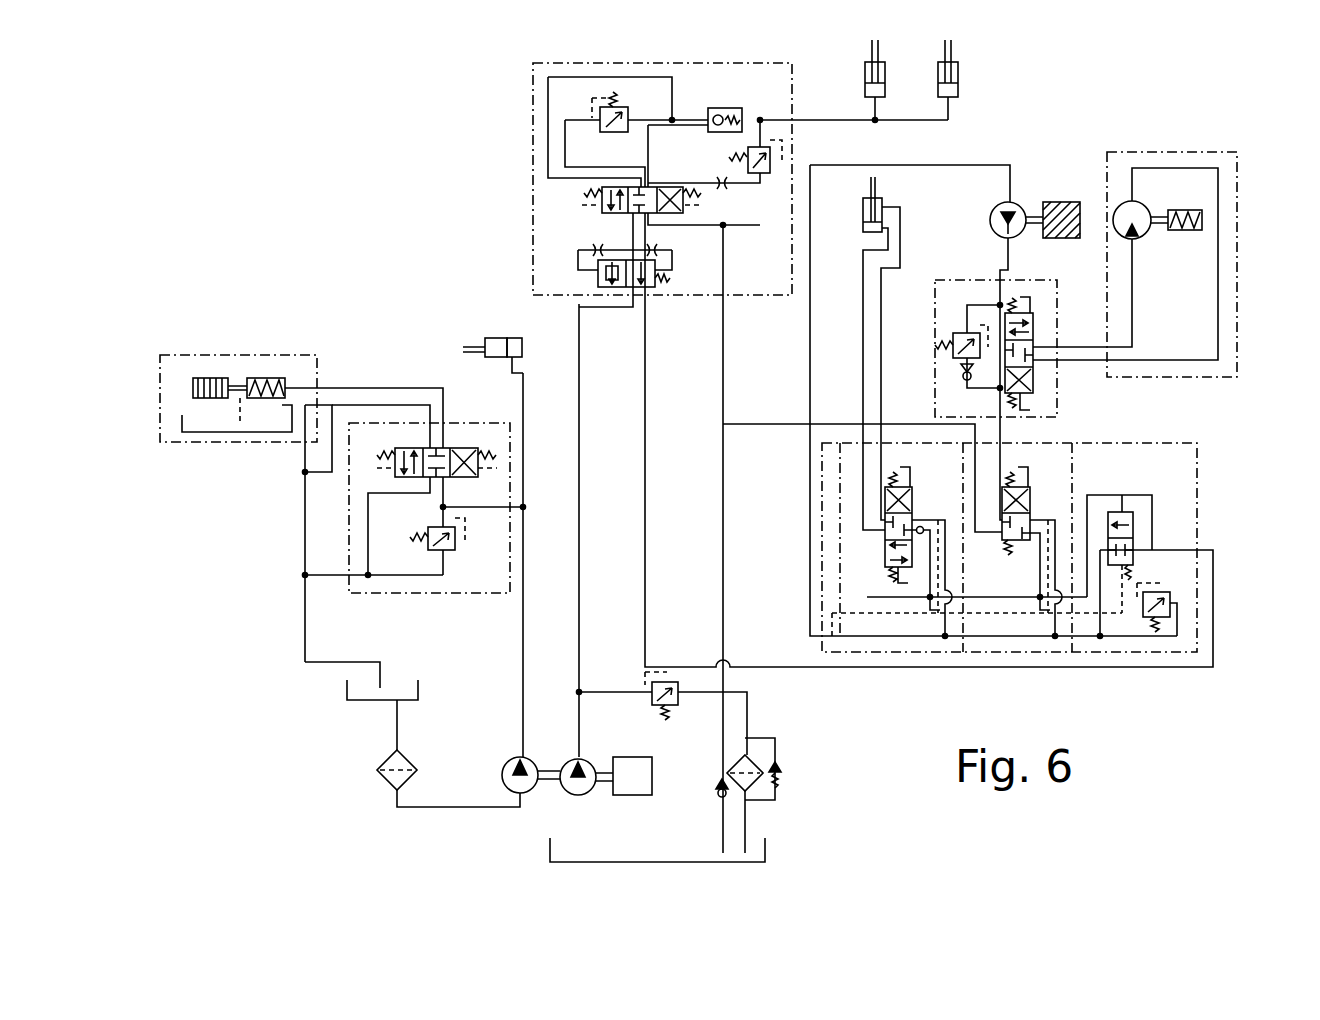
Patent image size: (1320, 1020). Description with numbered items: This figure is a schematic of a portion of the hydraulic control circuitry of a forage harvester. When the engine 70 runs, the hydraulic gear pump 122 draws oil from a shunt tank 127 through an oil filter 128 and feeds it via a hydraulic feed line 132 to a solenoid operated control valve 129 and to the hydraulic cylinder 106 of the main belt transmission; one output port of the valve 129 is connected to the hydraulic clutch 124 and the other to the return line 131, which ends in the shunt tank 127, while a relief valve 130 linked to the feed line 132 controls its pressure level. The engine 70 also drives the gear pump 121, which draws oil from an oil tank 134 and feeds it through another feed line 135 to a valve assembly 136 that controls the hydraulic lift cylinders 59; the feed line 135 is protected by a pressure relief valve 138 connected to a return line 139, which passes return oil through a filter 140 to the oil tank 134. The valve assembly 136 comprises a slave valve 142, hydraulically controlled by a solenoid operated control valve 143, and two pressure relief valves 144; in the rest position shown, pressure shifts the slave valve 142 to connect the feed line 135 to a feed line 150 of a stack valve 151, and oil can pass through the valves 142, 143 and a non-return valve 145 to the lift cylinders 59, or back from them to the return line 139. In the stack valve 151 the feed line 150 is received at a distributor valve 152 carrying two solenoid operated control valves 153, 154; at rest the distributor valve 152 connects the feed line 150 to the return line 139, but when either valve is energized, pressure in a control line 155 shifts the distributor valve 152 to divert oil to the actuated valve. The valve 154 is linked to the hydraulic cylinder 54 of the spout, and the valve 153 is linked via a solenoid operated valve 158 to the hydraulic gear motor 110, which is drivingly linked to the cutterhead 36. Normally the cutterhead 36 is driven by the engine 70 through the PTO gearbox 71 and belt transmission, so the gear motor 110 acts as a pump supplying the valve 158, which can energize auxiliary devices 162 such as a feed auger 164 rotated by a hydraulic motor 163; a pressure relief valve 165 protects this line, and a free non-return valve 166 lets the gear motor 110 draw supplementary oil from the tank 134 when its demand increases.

The cutterhead 36 is at (1062, 202).
The hydraulic cylinder 54 is at (863, 228).
The hydraulic lift cylinders 59 is at (886, 90).
The engine 70 is at (622, 797).
The PTO gearbox 71 is at (210, 355).
The hydraulic cylinder 106 is at (513, 338).
The hydraulic gear motor 110 is at (991, 228).
The gear pump 121 is at (566, 760).
The hydraulic gear pump 122 is at (508, 760).
The hydraulic clutch 124 is at (265, 378).
The shunt tank 127 is at (347, 690).
The oil filter 128 is at (378, 765).
The solenoid operated control valve 129 is at (460, 450).
The relief valve 130 is at (450, 552).
The return line 131 is at (305, 562).
The hydraulic feed line 132 is at (521, 660).
The oil tank 134 is at (550, 848).
The feed line 135 is at (581, 527).
The valve assembly 136 is at (530, 207).
The pressure relief valve 138 is at (652, 700).
The return line 139 is at (725, 607).
The filter 140 is at (757, 788).
The slave valve 142 is at (598, 277).
The solenoid operated control valve 143 is at (602, 210).
The pressure relief valves 144 is at (603, 128).
The non-return valve 145 is at (730, 108).
The feed line 150 is at (647, 522).
The stack valve 151 is at (1212, 519).
The distributor valve 152 is at (1137, 515).
The solenoid operated control valve 153 is at (1030, 497).
The solenoid operated control valve 154 is at (912, 498).
The control line 155 is at (862, 613).
The solenoid operated valve 158 is at (1035, 383).
The auxiliary device 162 is at (1238, 245).
The hydraulic motor 163 is at (1125, 203).
The feed auger 164 is at (1178, 232).
The pressure relief valve 165 is at (955, 362).
The free non-return valve 166 is at (716, 790).